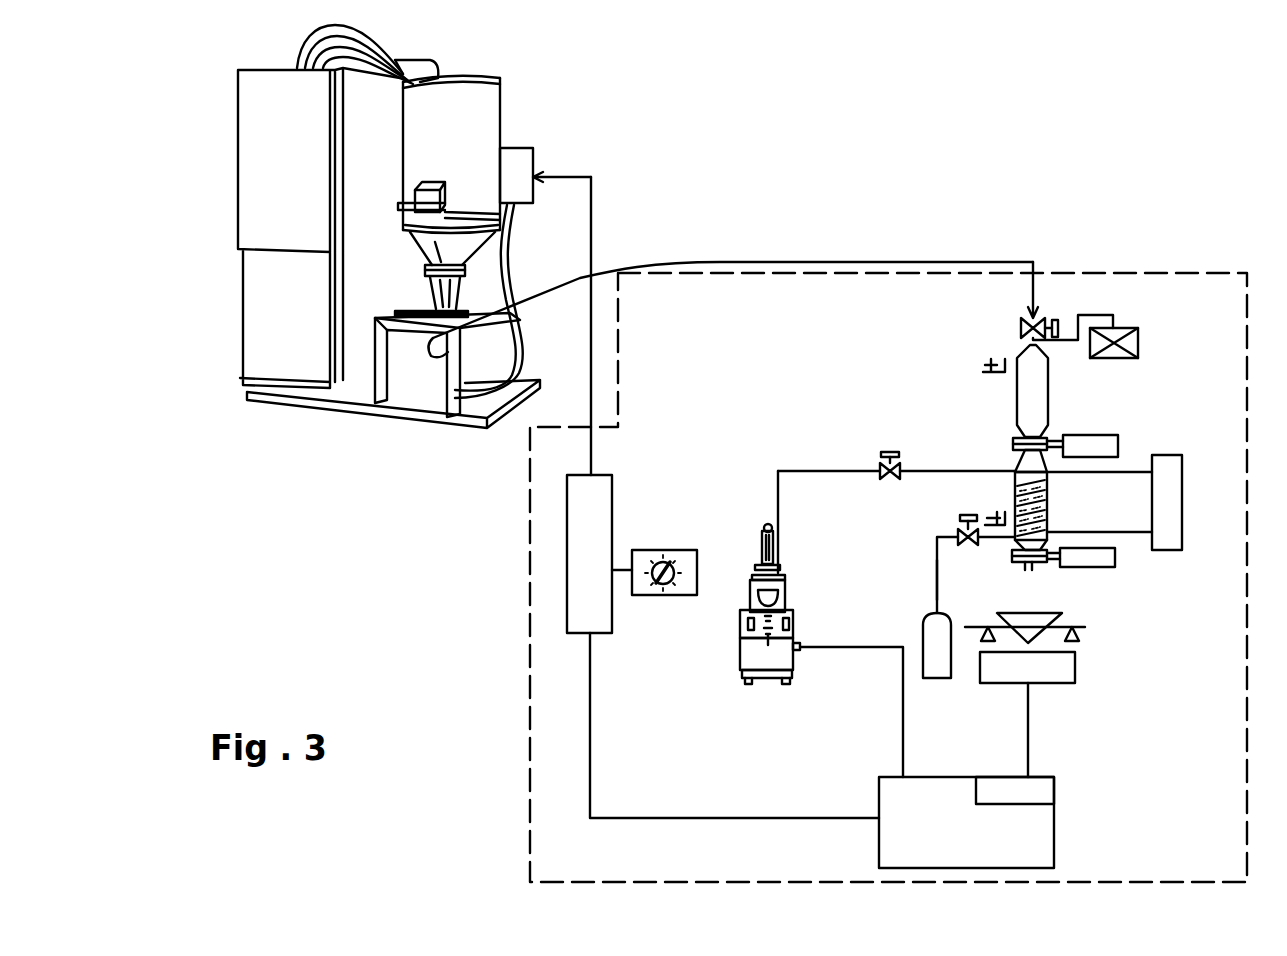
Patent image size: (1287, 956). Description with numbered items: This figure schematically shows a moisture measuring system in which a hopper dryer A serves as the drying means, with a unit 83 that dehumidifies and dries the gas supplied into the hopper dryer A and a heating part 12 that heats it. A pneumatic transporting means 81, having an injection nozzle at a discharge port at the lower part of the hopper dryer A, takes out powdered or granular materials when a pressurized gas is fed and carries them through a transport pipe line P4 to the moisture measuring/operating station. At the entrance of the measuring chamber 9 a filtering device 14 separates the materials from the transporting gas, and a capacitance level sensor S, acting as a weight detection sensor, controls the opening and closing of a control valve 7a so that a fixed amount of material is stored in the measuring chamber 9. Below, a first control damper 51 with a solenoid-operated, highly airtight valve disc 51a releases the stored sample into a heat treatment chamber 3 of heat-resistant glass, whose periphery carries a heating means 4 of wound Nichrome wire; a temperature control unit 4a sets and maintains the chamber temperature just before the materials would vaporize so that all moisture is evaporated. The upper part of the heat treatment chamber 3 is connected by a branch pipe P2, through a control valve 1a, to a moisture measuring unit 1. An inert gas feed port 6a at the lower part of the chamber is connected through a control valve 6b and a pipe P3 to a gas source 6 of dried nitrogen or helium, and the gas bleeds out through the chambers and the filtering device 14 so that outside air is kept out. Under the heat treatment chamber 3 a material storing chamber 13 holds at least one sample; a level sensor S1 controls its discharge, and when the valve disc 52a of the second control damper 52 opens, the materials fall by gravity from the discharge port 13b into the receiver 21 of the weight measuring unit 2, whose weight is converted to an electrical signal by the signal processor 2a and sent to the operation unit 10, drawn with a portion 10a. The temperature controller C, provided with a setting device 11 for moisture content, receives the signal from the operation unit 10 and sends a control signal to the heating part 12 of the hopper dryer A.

The hopper dryer A is at (536, 94).
The dehumidifying unit 83 is at (245, 159).
The pneumatic transporting means 81 is at (433, 373).
The heating part 12 is at (524, 158).
The transport pipe line P4 is at (765, 258).
The temperature controller C is at (612, 535).
The setting device 11 is at (672, 548).
The moisture measuring unit 1 is at (780, 600).
The control valve 1a is at (872, 463).
The branch pipe P2 is at (927, 469).
The control valve 7a is at (1036, 315).
The filtering device 14 is at (1130, 340).
The capacitance level sensor S is at (998, 360).
The measuring chamber 9 is at (1047, 386).
The valve disc 51a is at (1018, 440).
The first control damper 51 is at (1097, 442).
The heat treatment chamber 3 is at (1025, 467).
The heating means 4 is at (1047, 490).
The material storing chamber 13 is at (1047, 522).
The temperature control unit 4a is at (1175, 487).
The level sensor S1 is at (1001, 518).
The control valve 6b is at (958, 532).
The inert gas feed port 6a is at (937, 555).
The pipe P3 is at (937, 575).
The gas source 6 is at (935, 632).
The valve disc 52a is at (1013, 565).
The material discharge port 13b is at (1030, 566).
The second control damper 52 is at (1113, 562).
The weight measuring unit 2 is at (1056, 623).
The receiver 21 is at (1055, 615).
The signal processor 2a is at (1075, 673).
The operation unit 10 is at (1043, 823).
The memory 10a is at (1037, 790).